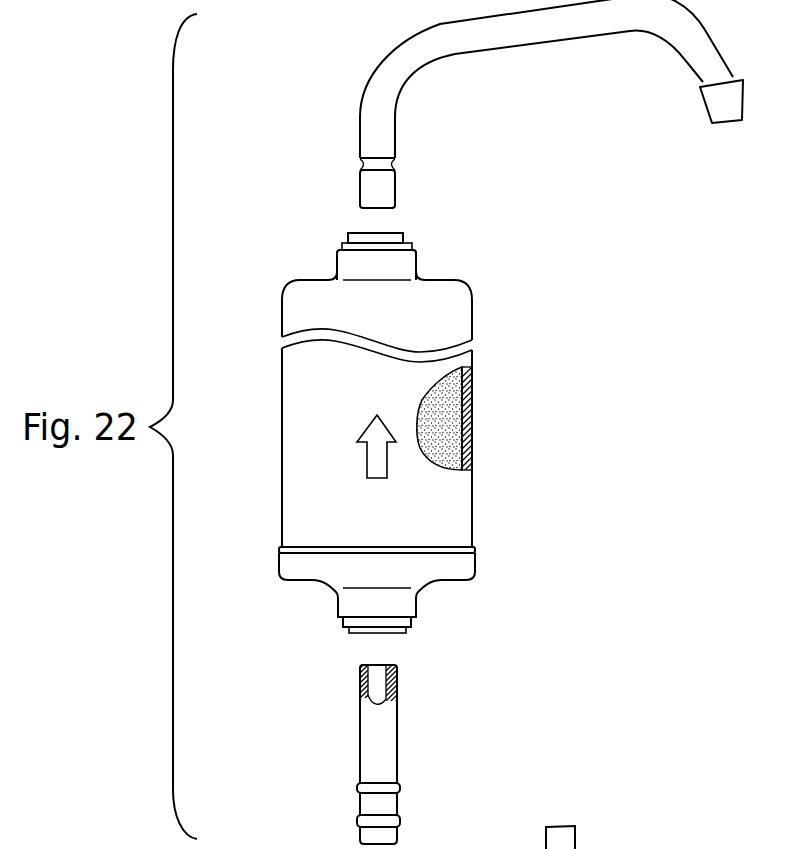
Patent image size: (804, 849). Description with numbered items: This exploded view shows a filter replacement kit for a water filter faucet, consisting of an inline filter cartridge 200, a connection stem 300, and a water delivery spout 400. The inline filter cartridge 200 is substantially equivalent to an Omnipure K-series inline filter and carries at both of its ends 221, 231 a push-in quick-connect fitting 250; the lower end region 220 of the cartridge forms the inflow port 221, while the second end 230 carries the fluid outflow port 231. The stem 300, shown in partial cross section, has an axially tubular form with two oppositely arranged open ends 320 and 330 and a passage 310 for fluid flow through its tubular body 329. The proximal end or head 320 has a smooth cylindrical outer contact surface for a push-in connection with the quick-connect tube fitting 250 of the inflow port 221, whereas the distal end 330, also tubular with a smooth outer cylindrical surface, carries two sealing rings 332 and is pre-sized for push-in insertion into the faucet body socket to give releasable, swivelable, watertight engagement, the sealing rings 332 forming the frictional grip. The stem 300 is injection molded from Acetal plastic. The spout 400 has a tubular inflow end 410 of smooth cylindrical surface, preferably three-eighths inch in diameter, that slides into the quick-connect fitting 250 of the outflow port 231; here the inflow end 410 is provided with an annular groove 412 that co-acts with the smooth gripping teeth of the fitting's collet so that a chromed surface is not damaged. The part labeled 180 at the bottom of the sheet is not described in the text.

The base / mounting member 180 is at (612, 837).
The inline filter cartridge 200 is at (454, 426).
The lower housing portion 220 is at (319, 573).
The inflow port 221 is at (420, 600).
The second end 230 is at (325, 305).
The outflow port 231 is at (418, 271).
The quick-connect tube fitting 250 is at (403, 233).
The connection stem 300 is at (460, 749).
The passage 310 is at (378, 678).
The proximal end 320 is at (365, 675).
The tubular body 329 is at (358, 722).
The distal end 330 is at (387, 837).
The sealing rings 332 is at (357, 787).
The water delivery spout 400 is at (624, 144).
The spout inflow end 410 is at (375, 190).
The annular groove 412 is at (376, 162).